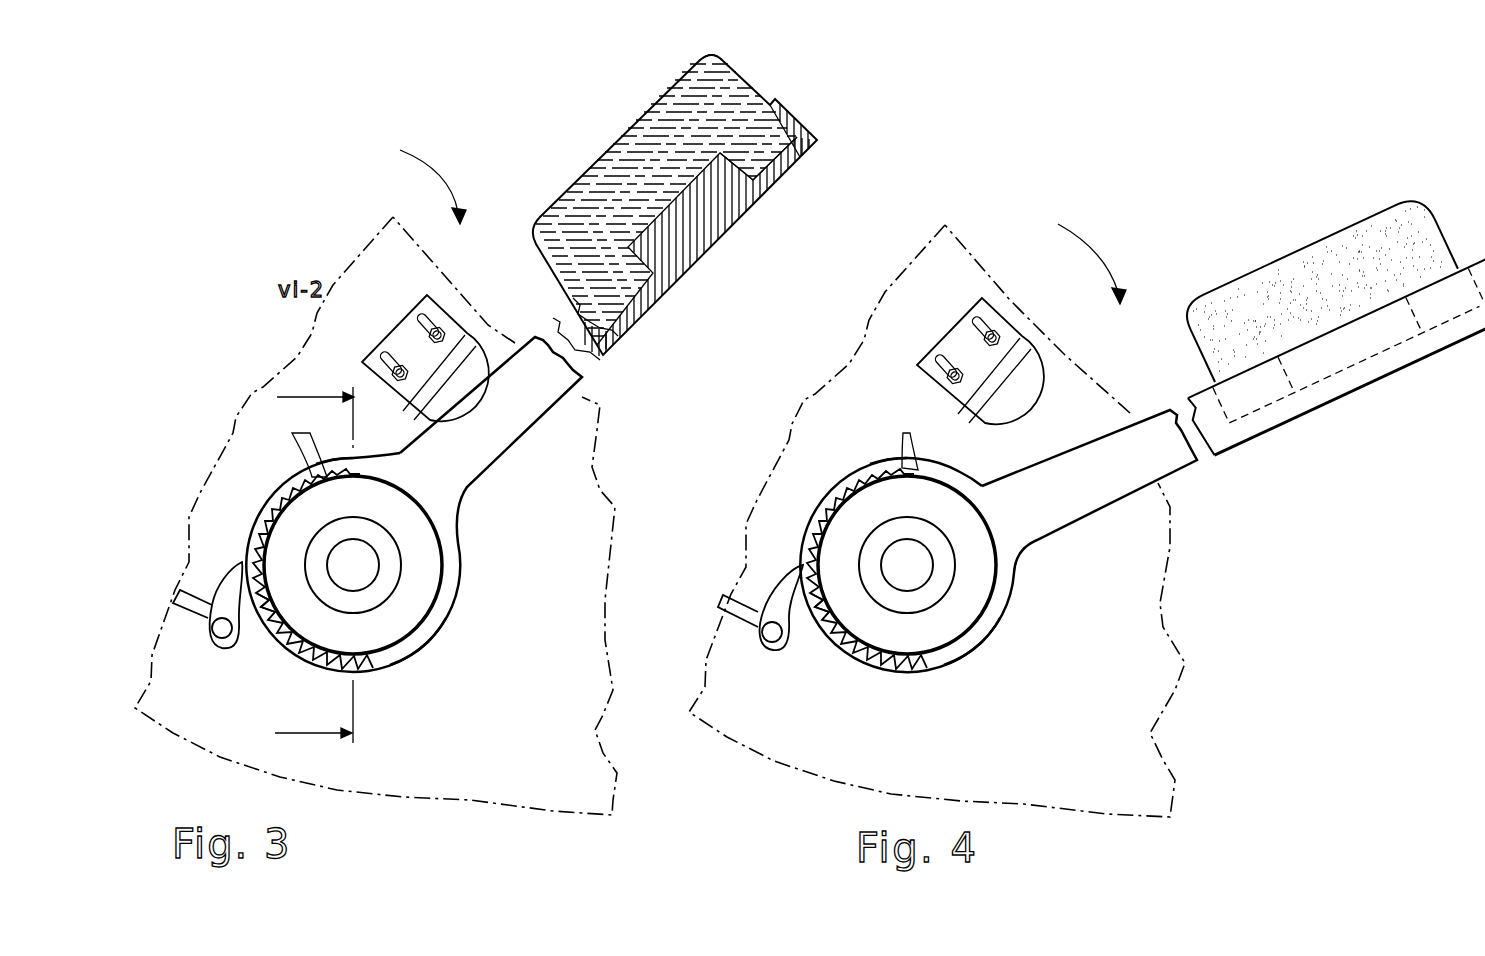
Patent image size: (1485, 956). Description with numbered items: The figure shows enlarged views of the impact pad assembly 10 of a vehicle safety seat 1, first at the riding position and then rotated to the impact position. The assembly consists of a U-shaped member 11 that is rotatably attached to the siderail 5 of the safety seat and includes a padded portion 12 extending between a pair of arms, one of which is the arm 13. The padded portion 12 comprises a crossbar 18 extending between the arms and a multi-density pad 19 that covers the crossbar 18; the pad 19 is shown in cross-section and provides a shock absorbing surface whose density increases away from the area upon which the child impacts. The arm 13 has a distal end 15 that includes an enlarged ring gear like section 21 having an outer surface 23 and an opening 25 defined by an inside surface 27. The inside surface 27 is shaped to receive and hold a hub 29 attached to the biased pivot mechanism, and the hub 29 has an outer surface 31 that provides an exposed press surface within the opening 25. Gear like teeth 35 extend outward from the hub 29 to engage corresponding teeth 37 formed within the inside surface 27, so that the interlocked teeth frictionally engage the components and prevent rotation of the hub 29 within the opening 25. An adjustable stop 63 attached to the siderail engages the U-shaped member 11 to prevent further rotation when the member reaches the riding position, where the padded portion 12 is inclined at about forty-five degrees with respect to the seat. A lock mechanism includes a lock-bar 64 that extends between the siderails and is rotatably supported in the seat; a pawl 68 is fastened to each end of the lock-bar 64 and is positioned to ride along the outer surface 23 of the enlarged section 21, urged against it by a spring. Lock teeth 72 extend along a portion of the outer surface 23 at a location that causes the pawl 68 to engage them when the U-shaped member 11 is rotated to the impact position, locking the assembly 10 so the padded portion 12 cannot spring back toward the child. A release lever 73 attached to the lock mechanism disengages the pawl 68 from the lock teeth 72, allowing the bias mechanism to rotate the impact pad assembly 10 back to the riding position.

In FIG. 3, the vehicle safety seat 1 is at (582, 703).
In FIG. 4, the vehicle safety seat 1 is at (1140, 680).
In FIG. 3, the siderail 5 is at (314, 565).
In FIG. 3, the impact pad assembly 10 is at (415, 173).
In FIG. 4, the impact pad assembly 10 is at (1073, 251).
In FIG. 3, the U-shaped member 11 is at (678, 306).
In FIG. 4, the U-shaped member 11 is at (1293, 428).
In FIG. 3, the padded portion 12 is at (640, 106).
In FIG. 4, the padded portion 12 is at (1357, 216).
In FIG. 3, the arm 13 is at (528, 412).
In FIG. 4, the arm 13 is at (1178, 468).
In FIG. 3, the distal end 15 is at (456, 625).
In FIG. 4, the distal end 15 is at (960, 665).
In FIG. 3, the crossbar 18 is at (715, 202).
In FIG. 4, the crossbar 18 is at (1355, 345).
In FIG. 3, the multi-density pad 19 is at (728, 80).
In FIG. 3, the enlarged ring gear like section 21 is at (456, 600).
In FIG. 4, the enlarged ring gear like section 21 is at (990, 645).
In FIG. 3, the outer surface 23 is at (415, 648).
In FIG. 4, the outer surface 23 is at (925, 680).
In FIG. 3, the opening 25 is at (440, 577).
In FIG. 4, the opening 25 is at (990, 607).
In FIG. 3, the inside surface 27 is at (380, 497).
In FIG. 4, the inside surface 27 is at (958, 524).
In FIG. 3, the hub 29 is at (430, 548).
In FIG. 4, the hub 29 is at (975, 566).
In FIG. 3, the outer surface (press surface) 31 is at (362, 558).
In FIG. 4, the outer surface (press surface) 31 is at (920, 557).
In FIG. 3, the gear like teeth 35 is at (292, 497).
In FIG. 4, the gear like teeth 35 is at (862, 495).
In FIG. 3, the teeth 37 is at (296, 434).
In FIG. 4, the teeth 37 is at (903, 433).
In FIG. 3, the adjustable stop 63 is at (410, 340).
In FIG. 4, the adjustable stop 63 is at (966, 346).
In FIG. 3, the lock-bar 64 is at (218, 640).
In FIG. 4, the lock-bar 64 is at (772, 642).
In FIG. 3, the pawl 68 is at (225, 575).
In FIG. 4, the pawl 68 is at (778, 590).
In FIG. 3, the lock teeth 72 is at (285, 652).
In FIG. 4, the lock teeth 72 is at (885, 676).
In FIG. 3, the release lever 73 is at (192, 610).
In FIG. 4, the release lever 73 is at (718, 600).